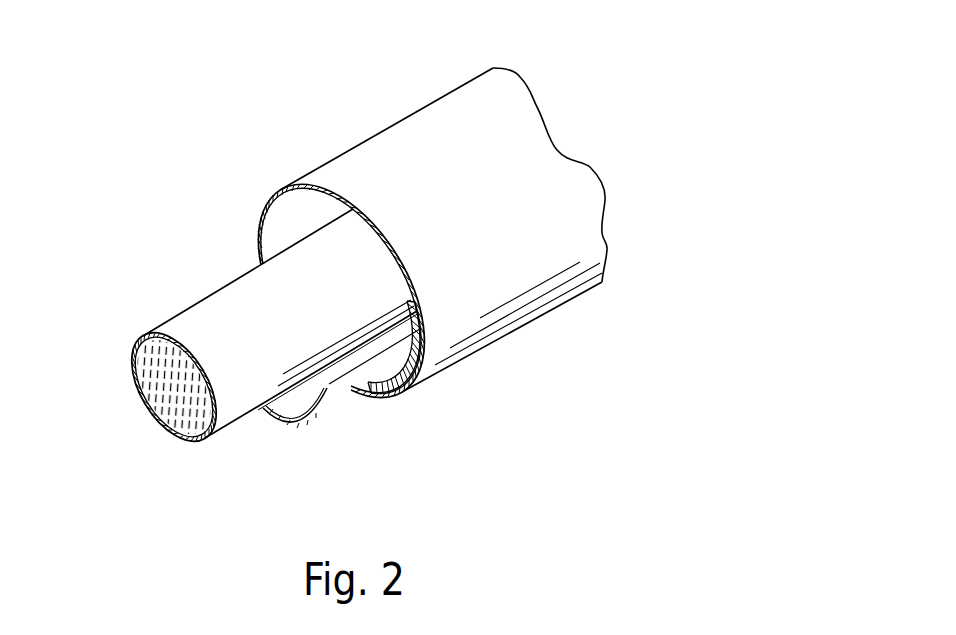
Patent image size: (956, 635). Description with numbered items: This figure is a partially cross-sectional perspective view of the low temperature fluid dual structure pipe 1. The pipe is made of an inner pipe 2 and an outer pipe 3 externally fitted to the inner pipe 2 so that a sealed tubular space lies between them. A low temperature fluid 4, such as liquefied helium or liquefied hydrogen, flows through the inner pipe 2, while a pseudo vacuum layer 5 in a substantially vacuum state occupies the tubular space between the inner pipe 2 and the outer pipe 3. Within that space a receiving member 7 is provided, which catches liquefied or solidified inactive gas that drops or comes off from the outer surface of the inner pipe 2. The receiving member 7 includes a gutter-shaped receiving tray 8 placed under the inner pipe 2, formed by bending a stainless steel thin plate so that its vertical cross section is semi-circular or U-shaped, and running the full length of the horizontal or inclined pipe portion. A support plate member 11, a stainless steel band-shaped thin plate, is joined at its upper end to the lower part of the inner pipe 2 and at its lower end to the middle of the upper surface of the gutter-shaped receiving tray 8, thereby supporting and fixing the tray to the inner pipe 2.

The low temperature fluid dual structure pipe 1 is at (330, 70).
The inner pipe 2 is at (188, 323).
The outer pipe 3 is at (415, 137).
The low temperature fluid 4 is at (170, 412).
The pseudo vacuum layer 5 is at (292, 220).
The receiving member 7 is at (371, 395).
The gutter-shaped receiving tray 8 is at (380, 367).
The support plate member 11 is at (293, 420).